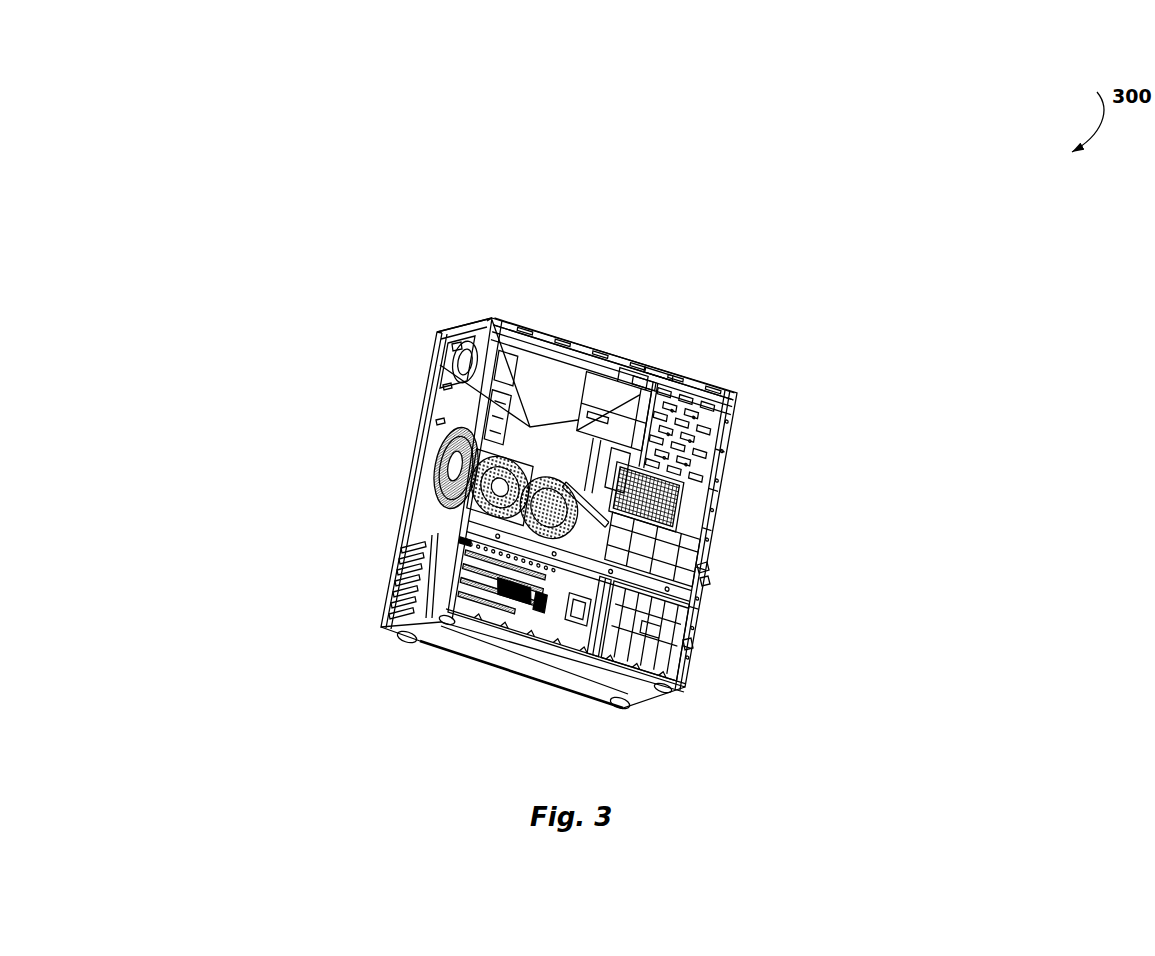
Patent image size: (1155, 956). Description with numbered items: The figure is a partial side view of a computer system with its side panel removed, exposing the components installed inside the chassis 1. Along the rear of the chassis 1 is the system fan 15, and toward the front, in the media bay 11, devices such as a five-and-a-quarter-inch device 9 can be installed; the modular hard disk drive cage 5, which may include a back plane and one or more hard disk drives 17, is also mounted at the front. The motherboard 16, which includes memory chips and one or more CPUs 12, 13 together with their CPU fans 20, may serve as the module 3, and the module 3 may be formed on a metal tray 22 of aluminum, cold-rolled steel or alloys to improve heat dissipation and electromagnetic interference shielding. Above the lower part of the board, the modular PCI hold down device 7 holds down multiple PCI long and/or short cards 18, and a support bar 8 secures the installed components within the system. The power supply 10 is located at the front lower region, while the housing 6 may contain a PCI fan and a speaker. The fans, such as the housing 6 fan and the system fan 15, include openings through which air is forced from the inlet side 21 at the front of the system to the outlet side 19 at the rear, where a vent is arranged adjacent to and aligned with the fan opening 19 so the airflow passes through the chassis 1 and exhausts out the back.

The chassis 1 is at (467, 396).
The module 3 is at (555, 447).
The modular hard disk drive cage 5 is at (660, 493).
The housing 6 is at (673, 615).
The modular PCI hold down device 7 is at (690, 648).
The support bar 8 is at (703, 571).
The 5¼ inch device 9 is at (724, 396).
The power supply 10 is at (528, 388).
The media bay 11 is at (700, 407).
The CPU 12 is at (532, 425).
The CPU 13 is at (668, 527).
The system fan 15 is at (438, 430).
The motherboard 16 is at (649, 402).
The hard disk drive 17 is at (578, 473).
The PCI long and/or short card 18 is at (405, 590).
The outlet side / fan opening 19 is at (435, 447).
The CPU fan 20 is at (492, 317).
The inlet side 21 is at (635, 640).
The metal tray 22 is at (648, 378).